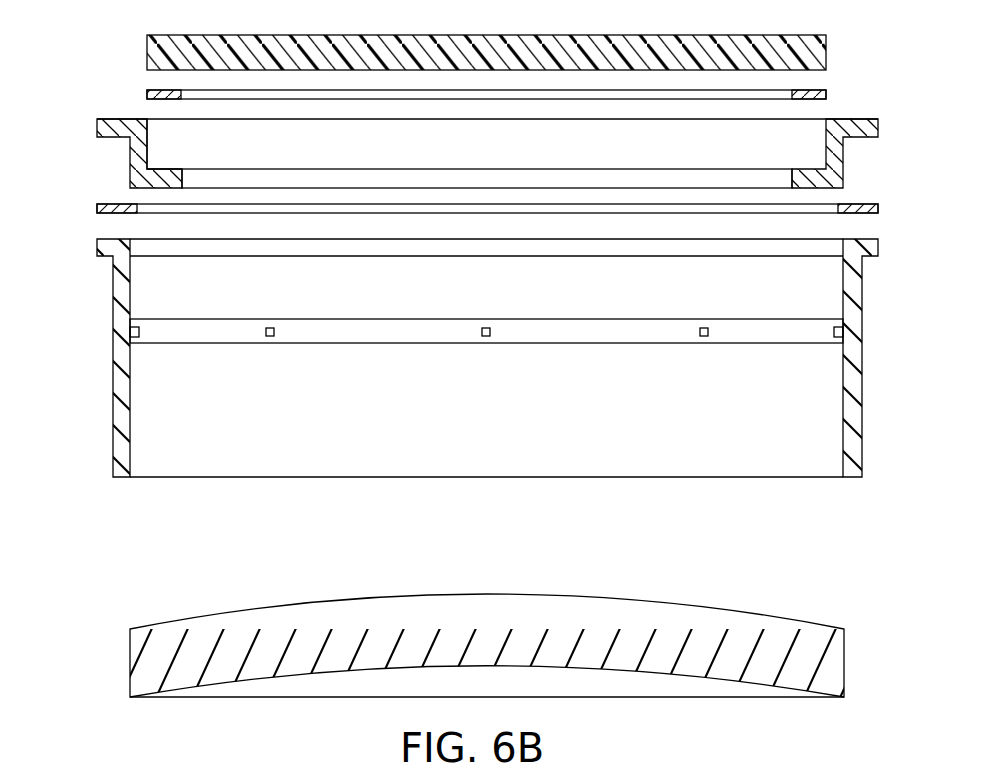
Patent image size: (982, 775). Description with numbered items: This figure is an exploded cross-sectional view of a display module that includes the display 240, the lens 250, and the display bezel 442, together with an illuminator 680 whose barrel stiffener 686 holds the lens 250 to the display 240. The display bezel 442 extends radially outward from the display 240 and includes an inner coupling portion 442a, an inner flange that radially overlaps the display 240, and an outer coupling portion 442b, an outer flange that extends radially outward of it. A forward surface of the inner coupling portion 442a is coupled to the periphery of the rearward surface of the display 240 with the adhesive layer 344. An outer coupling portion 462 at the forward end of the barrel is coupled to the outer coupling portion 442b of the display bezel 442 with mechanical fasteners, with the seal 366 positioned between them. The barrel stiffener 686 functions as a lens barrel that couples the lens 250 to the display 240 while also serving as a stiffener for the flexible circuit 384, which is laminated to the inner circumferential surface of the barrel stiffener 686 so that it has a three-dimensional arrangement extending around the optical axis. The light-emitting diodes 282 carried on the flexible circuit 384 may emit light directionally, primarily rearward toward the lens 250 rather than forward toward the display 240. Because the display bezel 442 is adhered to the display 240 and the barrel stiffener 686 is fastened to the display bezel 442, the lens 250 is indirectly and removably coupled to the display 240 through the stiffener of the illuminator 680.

The display 240 is at (826, 44).
The adhesive layer 344 is at (826, 93).
The display bezel 442 is at (493, 151).
The inner coupling portion 442a is at (159, 171).
The outer coupling portion 442b is at (97, 124).
The seal 366 is at (878, 209).
The illuminator 680 is at (491, 323).
The outer coupling portion 462 is at (96, 243).
The barrel stiffener 686 is at (491, 358).
The flexible circuit 384 is at (730, 323).
The light-emitting diodes 282 is at (843, 333).
The lens 250 is at (810, 668).